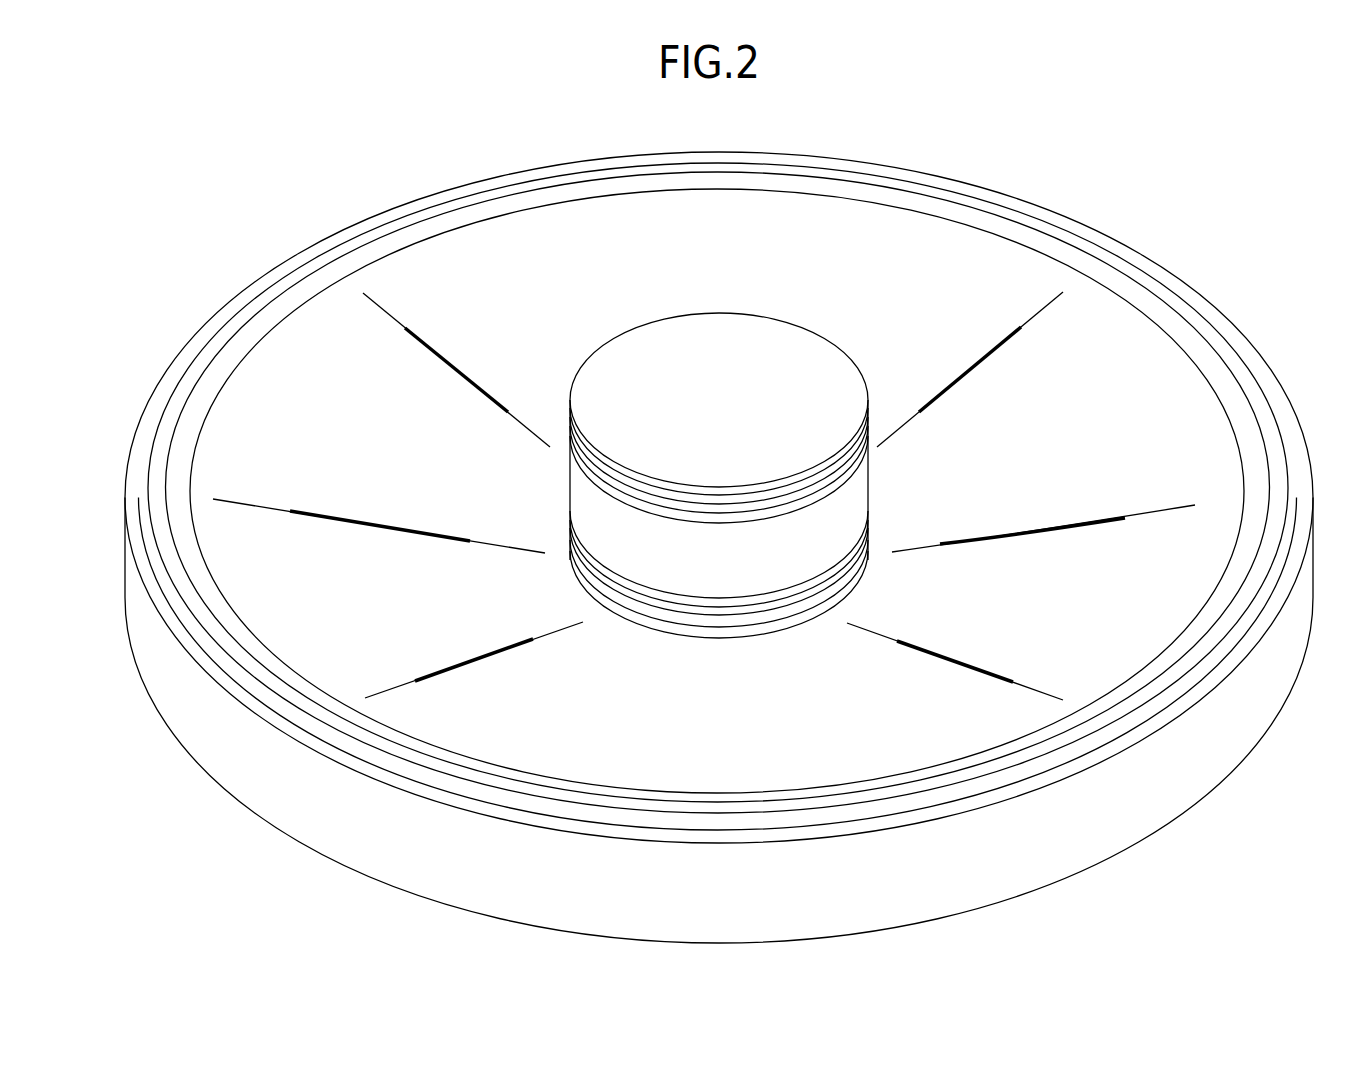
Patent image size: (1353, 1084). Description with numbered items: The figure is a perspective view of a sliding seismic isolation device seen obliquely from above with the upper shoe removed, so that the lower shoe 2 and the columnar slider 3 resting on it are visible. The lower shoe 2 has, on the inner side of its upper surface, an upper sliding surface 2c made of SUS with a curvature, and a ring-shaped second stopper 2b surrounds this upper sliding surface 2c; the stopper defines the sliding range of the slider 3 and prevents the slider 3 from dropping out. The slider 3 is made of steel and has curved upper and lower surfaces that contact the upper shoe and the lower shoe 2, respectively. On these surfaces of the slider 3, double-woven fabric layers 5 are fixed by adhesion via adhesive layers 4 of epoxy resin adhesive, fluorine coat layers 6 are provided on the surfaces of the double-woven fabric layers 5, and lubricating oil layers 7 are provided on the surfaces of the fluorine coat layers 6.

The lower shoe 2 is at (1080, 823).
The second stopper 2b is at (155, 453).
The upper sliding surface 2c is at (365, 393).
The columnar slider 3 is at (598, 517).
The adhesive layer 4 is at (753, 513).
The double-woven fabric layer 5 is at (808, 492).
The fluorine coat layer 6 is at (660, 490).
The lubricating oil layer 7 is at (668, 385).